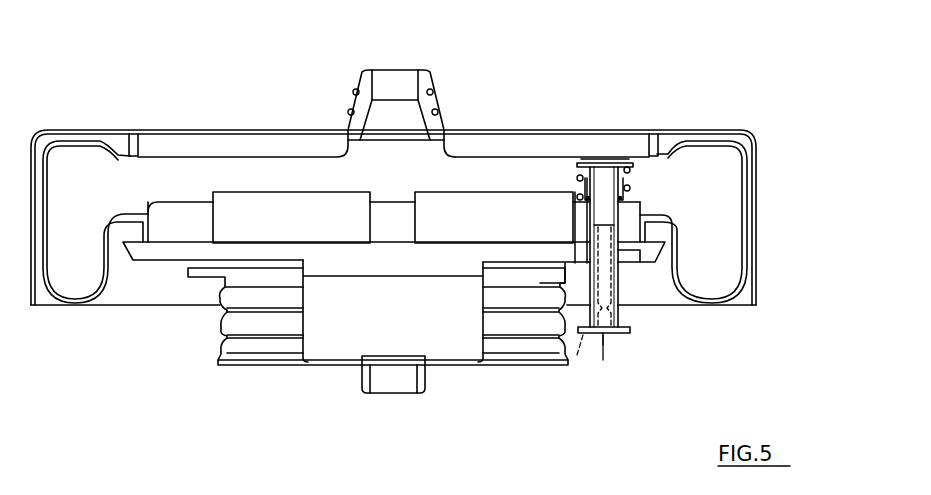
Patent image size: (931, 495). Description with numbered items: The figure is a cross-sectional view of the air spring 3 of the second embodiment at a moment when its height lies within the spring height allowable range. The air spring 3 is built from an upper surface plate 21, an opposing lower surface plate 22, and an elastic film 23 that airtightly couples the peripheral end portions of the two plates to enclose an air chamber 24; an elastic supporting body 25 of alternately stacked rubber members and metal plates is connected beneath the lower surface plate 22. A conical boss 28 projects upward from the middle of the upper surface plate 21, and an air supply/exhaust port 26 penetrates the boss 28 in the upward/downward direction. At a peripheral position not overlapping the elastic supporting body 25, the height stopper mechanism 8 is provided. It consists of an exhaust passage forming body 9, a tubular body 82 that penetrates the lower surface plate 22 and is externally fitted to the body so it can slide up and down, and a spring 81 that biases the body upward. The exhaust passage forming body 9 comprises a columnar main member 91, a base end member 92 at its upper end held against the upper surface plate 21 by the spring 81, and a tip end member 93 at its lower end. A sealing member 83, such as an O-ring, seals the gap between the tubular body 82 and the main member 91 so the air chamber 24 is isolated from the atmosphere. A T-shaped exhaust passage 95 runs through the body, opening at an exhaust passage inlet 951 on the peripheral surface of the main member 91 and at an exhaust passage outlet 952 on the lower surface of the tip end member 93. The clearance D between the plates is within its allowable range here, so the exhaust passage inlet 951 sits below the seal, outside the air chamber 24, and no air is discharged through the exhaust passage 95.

The air spring 3 is at (244, 407).
The height stopper mechanism 8 is at (670, 209).
The exhaust passage forming body 9 is at (645, 339).
The upper surface plate 21 is at (181, 129).
The lower surface plate 22 is at (150, 268).
The elastic film 23 is at (98, 306).
The air chamber 24 is at (96, 232).
The elastic supporting body 25 is at (283, 366).
The air supply/exhaust port 26 is at (408, 83).
The boss 28 is at (350, 103).
The spring 81 is at (580, 176).
The tubular body 82 is at (626, 250).
The sealing member 83 is at (580, 188).
The main member 91 is at (619, 217).
The base end member 92 is at (624, 158).
The tip end member 93 is at (619, 334).
The exhaust passage 95 is at (577, 355).
The exhaust passage inlet 951 is at (619, 227).
The exhaust passage outlet 952 is at (603, 345).
The clearance D is at (773, 160).